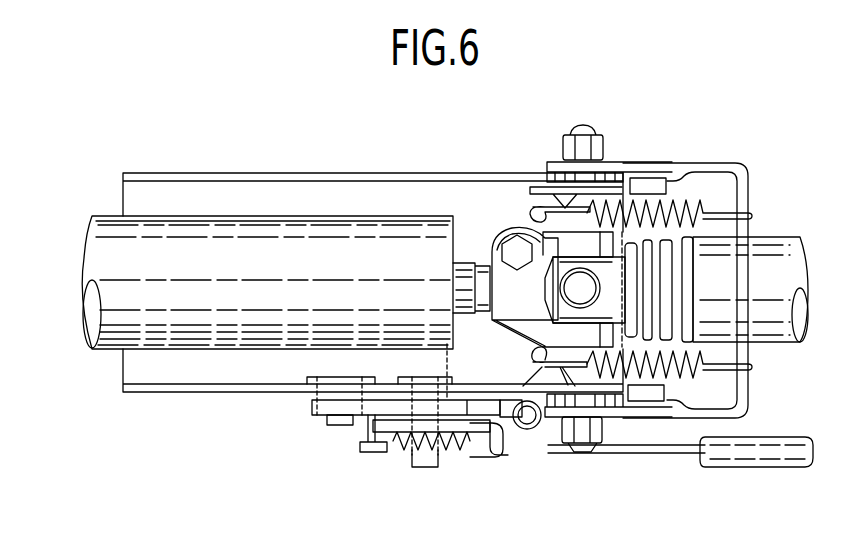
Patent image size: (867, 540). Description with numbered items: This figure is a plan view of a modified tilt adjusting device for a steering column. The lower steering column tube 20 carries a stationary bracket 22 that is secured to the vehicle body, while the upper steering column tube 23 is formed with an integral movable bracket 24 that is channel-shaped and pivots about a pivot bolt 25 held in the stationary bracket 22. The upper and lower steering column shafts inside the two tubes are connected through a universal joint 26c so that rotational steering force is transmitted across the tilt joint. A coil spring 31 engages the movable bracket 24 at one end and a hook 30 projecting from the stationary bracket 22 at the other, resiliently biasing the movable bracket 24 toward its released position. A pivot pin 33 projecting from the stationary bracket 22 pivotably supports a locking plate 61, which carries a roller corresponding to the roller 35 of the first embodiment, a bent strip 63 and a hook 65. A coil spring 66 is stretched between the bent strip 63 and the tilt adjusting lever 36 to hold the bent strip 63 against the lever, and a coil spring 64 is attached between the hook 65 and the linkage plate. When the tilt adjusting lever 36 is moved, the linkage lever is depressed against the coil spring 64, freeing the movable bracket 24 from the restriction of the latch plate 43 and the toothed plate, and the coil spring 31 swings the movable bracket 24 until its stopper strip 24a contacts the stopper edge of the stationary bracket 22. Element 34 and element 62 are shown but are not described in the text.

The lower steering column tube 20 is at (209, 226).
The stationary bracket 22 is at (207, 394).
The upper steering column tube 23 is at (776, 240).
The movable bracket 24 is at (752, 156).
The stopper strip 24a is at (609, 264).
The pivot bolt 25 is at (568, 133).
The universal joint 26c is at (481, 262).
The hook 30 is at (532, 190).
The coil spring 31 is at (752, 393).
The pivot pin 33 is at (427, 468).
The block 34 is at (335, 424).
The roller 35 is at (484, 398).
The tilt adjusting lever 36 is at (693, 470).
The latch plate 43 is at (306, 407).
The locking plate 61 is at (452, 344).
The block 62 is at (645, 405).
The bent strip 63 is at (366, 452).
The coil spring 64 is at (536, 430).
The hook 65 is at (510, 453).
The coil spring 66 is at (405, 453).